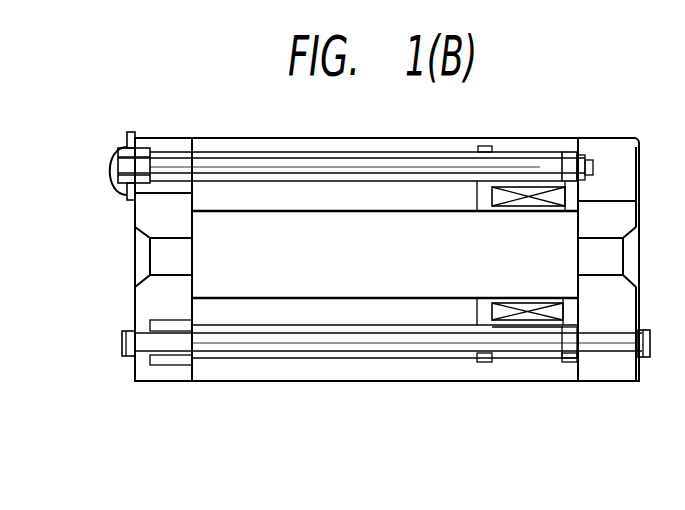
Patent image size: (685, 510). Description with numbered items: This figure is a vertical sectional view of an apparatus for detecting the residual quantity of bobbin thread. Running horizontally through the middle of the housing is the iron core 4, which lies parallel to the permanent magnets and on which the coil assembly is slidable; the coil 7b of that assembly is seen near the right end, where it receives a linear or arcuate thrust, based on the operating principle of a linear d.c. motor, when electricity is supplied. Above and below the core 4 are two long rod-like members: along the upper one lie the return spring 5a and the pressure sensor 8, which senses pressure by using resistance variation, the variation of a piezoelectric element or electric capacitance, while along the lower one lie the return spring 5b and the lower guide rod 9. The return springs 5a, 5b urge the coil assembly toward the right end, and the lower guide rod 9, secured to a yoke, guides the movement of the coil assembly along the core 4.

The iron core 4 is at (367, 282).
The return spring 5a is at (257, 152).
The return spring 5b is at (300, 360).
The coil 7b is at (563, 193).
The pressure sensor 8 is at (322, 163).
The lower guide rod 9 is at (510, 343).